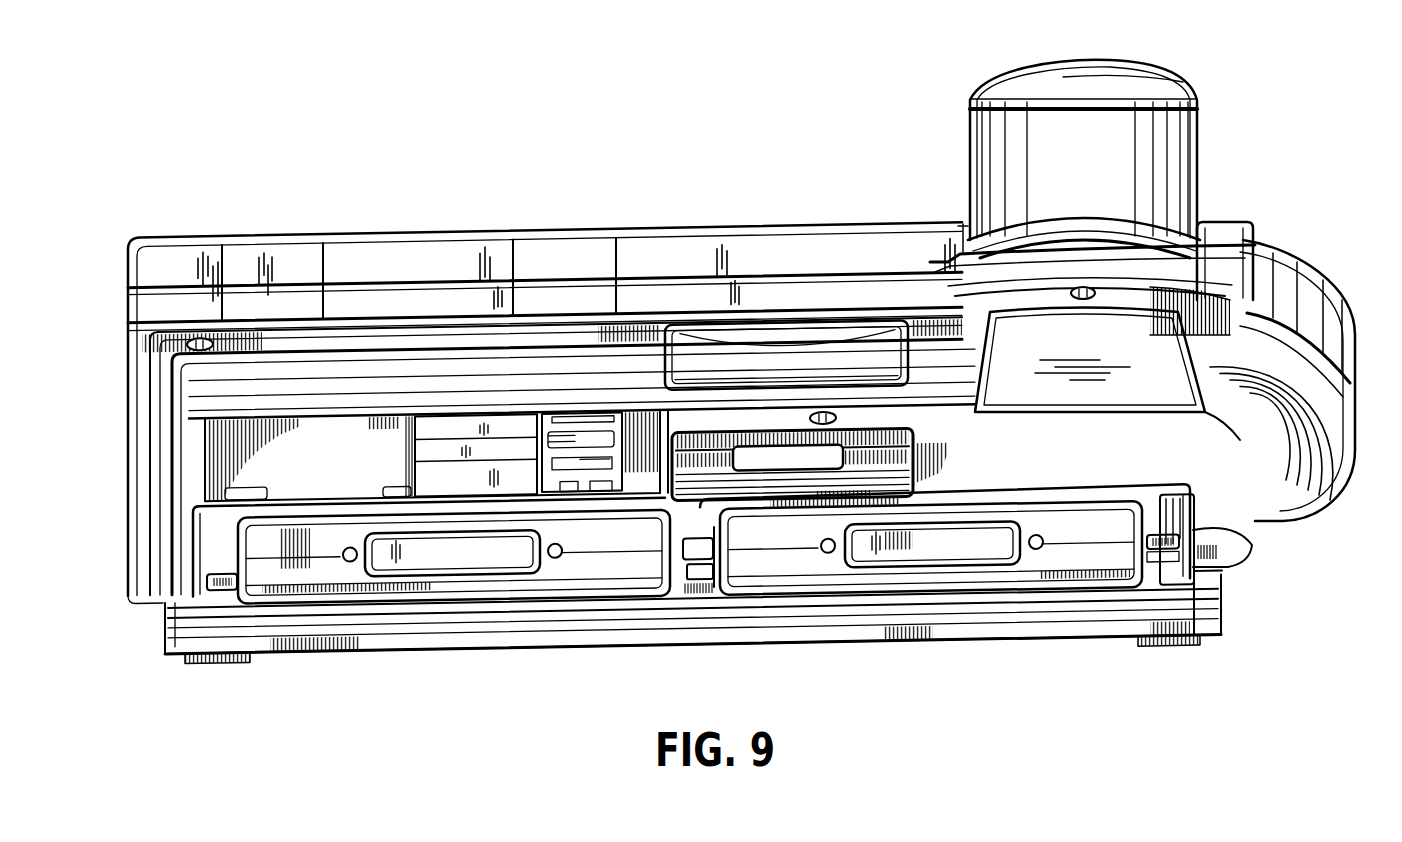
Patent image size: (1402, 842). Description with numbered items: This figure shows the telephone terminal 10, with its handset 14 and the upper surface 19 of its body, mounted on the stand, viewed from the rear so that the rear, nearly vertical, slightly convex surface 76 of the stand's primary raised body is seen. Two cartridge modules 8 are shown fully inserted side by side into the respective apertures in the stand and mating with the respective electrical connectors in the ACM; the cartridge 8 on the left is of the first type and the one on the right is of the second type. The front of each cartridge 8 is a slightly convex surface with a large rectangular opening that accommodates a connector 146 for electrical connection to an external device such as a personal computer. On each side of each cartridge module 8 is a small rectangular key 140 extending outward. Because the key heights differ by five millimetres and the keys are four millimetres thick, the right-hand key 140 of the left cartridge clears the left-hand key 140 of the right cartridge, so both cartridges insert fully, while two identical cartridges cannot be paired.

The telephone terminal 10 is at (413, 199).
The handset 14 is at (1172, 152).
The upper surface 19 is at (1210, 440).
The rear nearly vertical slightly convex surface 76 is at (1168, 512).
The cartridge module 8 is at (613, 567).
The connector 146 is at (480, 560).
The key 140 is at (219, 588).